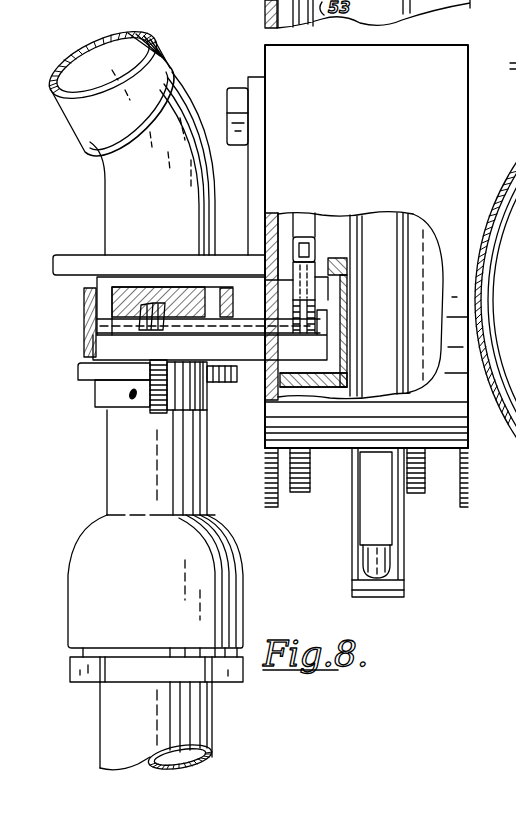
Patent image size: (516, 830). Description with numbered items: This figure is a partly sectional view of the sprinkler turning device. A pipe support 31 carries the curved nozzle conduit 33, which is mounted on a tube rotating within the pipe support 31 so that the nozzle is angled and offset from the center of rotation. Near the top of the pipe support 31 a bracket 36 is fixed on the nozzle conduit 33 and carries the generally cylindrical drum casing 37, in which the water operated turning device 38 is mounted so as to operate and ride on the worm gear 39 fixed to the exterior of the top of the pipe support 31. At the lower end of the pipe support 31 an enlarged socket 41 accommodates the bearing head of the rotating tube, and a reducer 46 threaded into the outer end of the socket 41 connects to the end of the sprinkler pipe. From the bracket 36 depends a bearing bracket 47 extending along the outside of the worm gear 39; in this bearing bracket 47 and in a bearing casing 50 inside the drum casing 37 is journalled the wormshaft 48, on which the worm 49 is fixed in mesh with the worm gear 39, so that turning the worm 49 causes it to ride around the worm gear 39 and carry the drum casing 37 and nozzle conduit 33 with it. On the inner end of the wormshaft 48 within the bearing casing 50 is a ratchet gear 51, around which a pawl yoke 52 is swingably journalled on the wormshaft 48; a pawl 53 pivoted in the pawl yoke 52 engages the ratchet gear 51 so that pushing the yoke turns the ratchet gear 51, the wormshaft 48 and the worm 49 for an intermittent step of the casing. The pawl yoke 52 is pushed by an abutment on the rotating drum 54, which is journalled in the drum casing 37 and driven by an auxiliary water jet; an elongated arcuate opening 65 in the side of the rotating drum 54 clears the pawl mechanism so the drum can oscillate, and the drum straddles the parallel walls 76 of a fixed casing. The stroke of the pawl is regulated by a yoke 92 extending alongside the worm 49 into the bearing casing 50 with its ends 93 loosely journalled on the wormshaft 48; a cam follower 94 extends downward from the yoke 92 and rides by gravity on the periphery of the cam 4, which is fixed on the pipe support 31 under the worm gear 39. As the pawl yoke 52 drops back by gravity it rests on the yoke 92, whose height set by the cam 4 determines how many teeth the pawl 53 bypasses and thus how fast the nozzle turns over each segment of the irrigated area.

The cam 4 is at (86, 391).
The pipe support 31 is at (207, 713).
The nozzle conduit 33 is at (177, 90).
The bracket 36 is at (230, 268).
The drum casing 37 is at (379, 113).
The water operated turning device 38 is at (433, 466).
The worm gear 39 is at (84, 300).
The socket 41 is at (85, 585).
The reducer 46 is at (80, 667).
The bearing bracket 47 is at (107, 281).
The wormshaft 48 is at (246, 328).
The worm 49 is at (171, 330).
The bearing casing 50 is at (344, 291).
The ratchet gear 51 is at (300, 335).
The pawl yoke 52 is at (315, 245).
The pawl 53 is at (310, 251).
The rotating drum 54 is at (312, 489).
The elongated arcuate opening 65 is at (289, 392).
The parallel walls 76 is at (352, 528).
The yoke 92 is at (246, 354).
The yoke ends 93 is at (93, 332).
The cam follower 94 is at (153, 412).